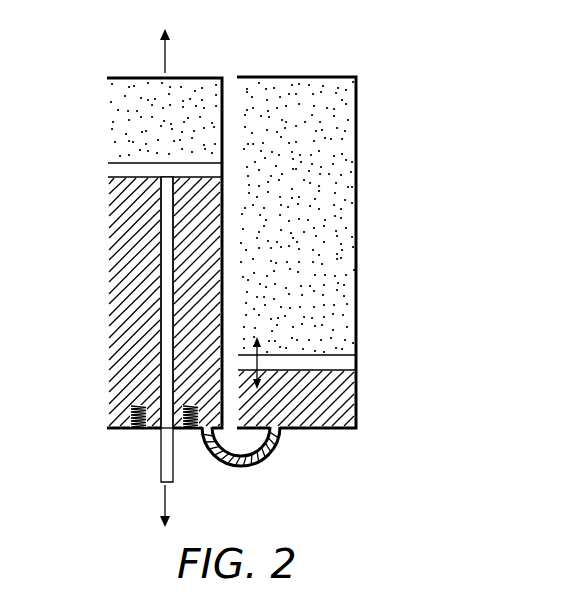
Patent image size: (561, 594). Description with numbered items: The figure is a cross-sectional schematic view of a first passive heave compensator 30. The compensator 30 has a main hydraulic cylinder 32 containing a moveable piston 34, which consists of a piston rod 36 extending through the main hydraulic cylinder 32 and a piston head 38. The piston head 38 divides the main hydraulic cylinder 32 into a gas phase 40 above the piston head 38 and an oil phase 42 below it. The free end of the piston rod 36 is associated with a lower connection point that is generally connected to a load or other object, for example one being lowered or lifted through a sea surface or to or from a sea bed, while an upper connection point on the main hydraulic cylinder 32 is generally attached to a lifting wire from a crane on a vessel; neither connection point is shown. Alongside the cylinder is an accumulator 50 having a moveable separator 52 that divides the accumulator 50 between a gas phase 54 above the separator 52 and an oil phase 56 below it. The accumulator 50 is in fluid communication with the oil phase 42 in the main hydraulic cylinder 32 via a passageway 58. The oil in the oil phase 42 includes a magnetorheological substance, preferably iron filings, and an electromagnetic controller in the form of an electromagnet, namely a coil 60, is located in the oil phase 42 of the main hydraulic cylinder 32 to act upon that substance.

The first passive heave compensator 30 is at (93, 55).
The main hydraulic cylinder 32 is at (108, 134).
The moveable piston 34 is at (163, 333).
The piston rod 36 is at (159, 464).
The piston head 38 is at (117, 170).
The gas phase 40 is at (117, 99).
The oil phase 42 is at (117, 234).
The accumulator 50 is at (358, 196).
The moveable separator 52 is at (348, 361).
The gas phase 54 is at (348, 126).
The oil phase 56 is at (348, 398).
The passageway 58 is at (241, 468).
The coil 60 is at (188, 404).